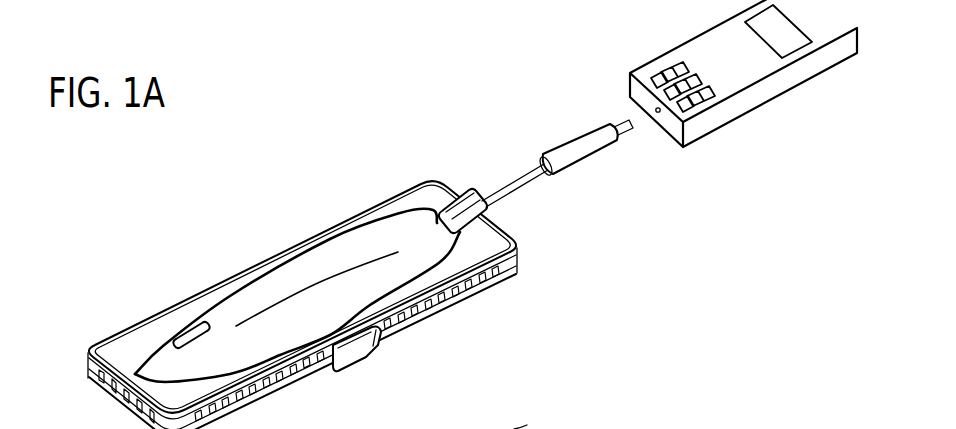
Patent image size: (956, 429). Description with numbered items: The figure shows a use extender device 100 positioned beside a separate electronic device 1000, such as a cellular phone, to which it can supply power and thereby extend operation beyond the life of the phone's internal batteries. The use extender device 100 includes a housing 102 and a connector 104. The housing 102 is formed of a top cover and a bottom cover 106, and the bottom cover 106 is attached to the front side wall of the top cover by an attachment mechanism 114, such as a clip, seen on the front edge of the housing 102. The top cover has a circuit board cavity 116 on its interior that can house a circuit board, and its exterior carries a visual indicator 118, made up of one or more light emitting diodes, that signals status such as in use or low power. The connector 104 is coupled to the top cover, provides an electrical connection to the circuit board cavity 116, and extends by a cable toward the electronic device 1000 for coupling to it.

The use extender device 100 is at (193, 214).
The housing 102 is at (383, 198).
The connector 104 is at (530, 172).
The bottom cover 106 is at (527, 425).
The attachment mechanism 114 is at (365, 360).
The circuit board cavity 116 is at (223, 281).
The visual indicator 118 is at (186, 333).
The electronic device 1000 is at (705, 43).